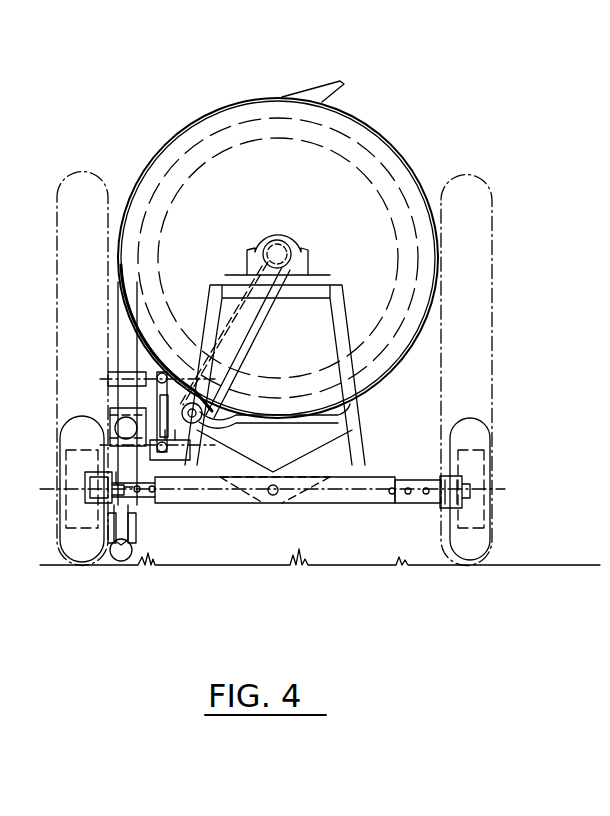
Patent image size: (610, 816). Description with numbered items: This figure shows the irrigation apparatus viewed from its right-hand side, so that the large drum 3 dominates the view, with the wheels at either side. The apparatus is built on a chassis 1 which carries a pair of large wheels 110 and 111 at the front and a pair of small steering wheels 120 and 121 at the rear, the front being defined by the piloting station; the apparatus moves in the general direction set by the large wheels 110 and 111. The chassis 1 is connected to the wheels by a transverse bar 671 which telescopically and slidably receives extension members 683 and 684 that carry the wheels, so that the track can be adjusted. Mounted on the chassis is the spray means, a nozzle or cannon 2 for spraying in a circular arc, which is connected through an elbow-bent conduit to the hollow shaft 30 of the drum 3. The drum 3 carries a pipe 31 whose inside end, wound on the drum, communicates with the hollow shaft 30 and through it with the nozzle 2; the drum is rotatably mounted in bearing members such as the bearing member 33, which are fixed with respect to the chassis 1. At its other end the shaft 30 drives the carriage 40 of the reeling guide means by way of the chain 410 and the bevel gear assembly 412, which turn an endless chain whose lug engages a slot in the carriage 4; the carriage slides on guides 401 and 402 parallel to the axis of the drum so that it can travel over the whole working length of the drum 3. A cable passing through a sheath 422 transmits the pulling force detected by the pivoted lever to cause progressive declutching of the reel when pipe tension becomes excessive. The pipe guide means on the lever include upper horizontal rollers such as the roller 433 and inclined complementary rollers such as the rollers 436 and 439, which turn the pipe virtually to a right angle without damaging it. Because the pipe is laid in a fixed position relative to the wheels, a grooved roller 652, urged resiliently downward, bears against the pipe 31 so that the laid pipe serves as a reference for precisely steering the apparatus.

The chassis 1 is at (366, 440).
The nozzle or cannon 2 is at (322, 90).
The drum 3 is at (208, 95).
The carriage 4 is at (84, 371).
The hollow shaft 30 is at (292, 244).
The pipe 31 is at (121, 562).
The bearing member 33 is at (270, 242).
The carriage 40 is at (118, 375).
The large wheel 110 is at (470, 176).
The large wheel 111 is at (83, 170).
The small steering wheel 120 is at (480, 428).
The small steering wheel 121 is at (64, 428).
The guide 401 is at (165, 370).
The guide 402 is at (170, 428).
The chain 410 is at (262, 316).
The bevel gear assembly 412 is at (204, 426).
The sheath 422 is at (350, 416).
The upper horizontal roller 433 is at (135, 377).
The inclined complementary roller 436 is at (106, 381).
The inclined complementary roller 439 is at (138, 392).
The grooved roller 652 is at (112, 540).
The transverse bar 671 is at (318, 504).
The extension member 683 is at (412, 504).
The extension member 684 is at (150, 500).